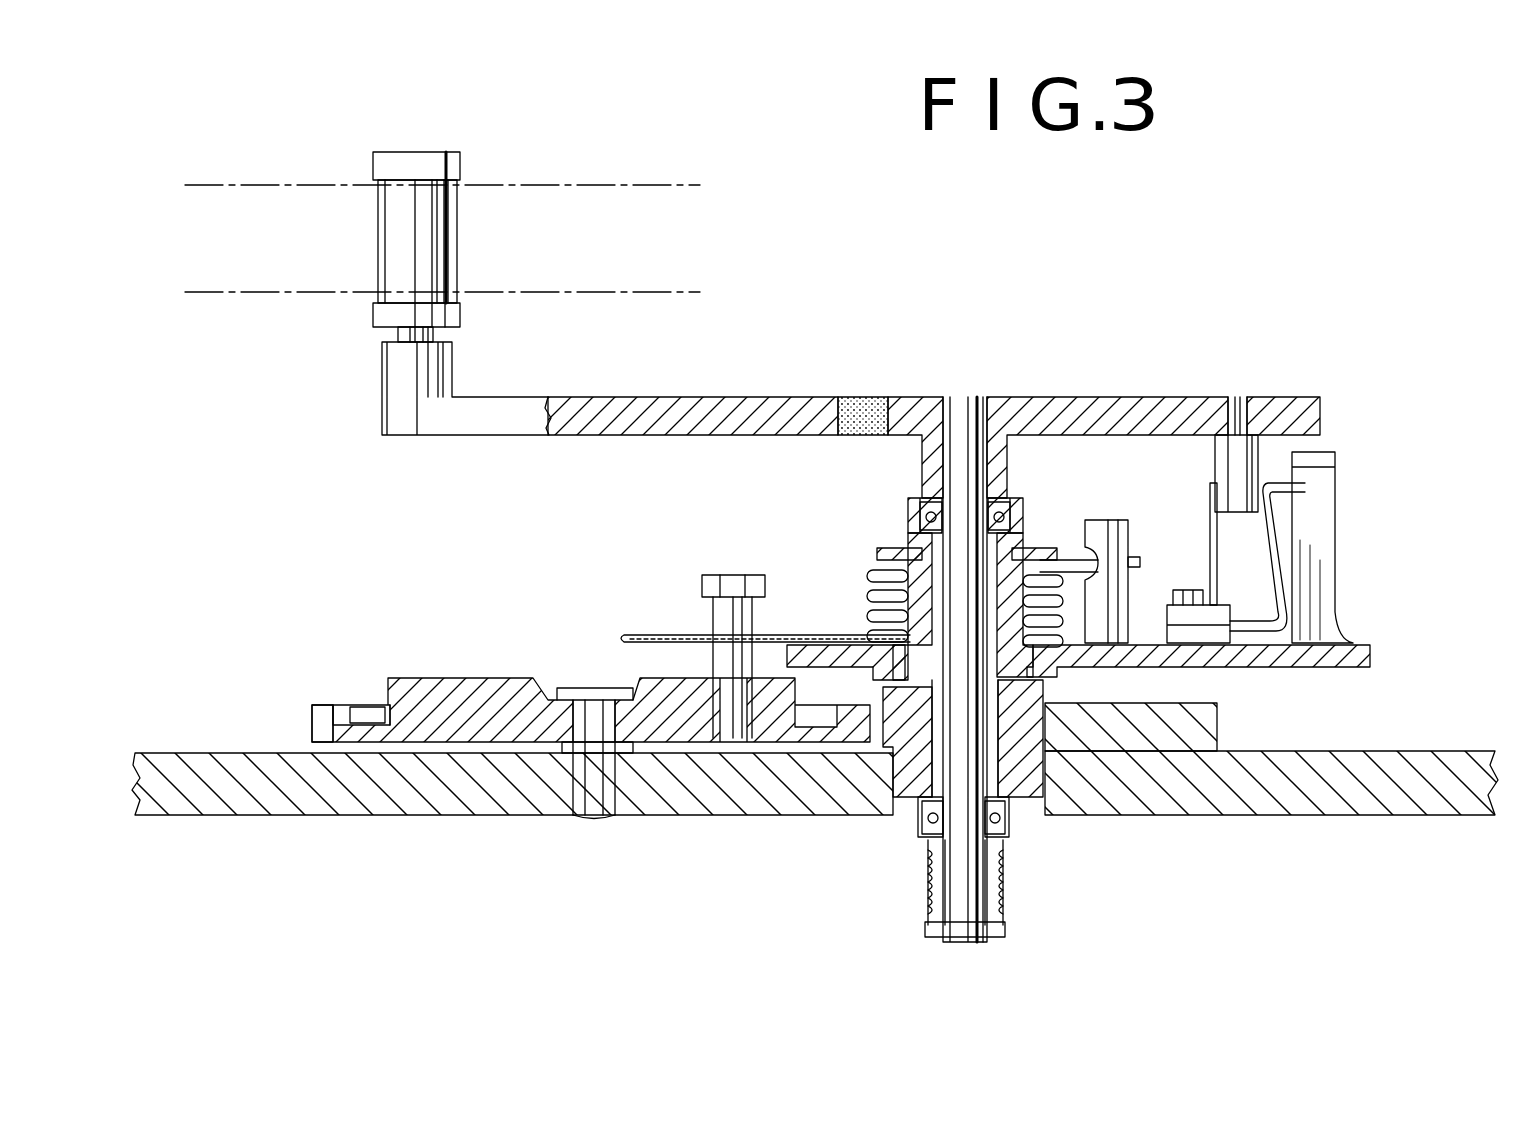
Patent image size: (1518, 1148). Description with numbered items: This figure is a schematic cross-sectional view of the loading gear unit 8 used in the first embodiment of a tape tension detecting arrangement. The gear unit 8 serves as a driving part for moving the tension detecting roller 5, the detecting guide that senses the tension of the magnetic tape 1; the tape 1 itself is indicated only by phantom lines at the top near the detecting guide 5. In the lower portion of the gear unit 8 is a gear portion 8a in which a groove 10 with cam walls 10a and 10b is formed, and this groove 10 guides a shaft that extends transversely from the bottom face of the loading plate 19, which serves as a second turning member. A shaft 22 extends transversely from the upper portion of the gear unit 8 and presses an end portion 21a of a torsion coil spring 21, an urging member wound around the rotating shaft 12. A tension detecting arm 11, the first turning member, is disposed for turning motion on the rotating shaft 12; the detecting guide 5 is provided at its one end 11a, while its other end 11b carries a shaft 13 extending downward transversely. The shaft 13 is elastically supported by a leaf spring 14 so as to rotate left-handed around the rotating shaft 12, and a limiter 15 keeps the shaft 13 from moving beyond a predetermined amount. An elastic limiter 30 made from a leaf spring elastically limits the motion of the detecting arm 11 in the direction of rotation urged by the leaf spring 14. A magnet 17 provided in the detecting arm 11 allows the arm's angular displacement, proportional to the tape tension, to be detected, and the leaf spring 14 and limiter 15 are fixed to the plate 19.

The magnetic tape 1 is at (613, 228).
The tension detecting roller 5 is at (400, 225).
The loading gear unit 8 is at (827, 730).
The gear portion 8a is at (340, 703).
The groove 10 is at (368, 705).
The cam wall 10a is at (395, 735).
The cam wall 10b is at (337, 720).
The tension detecting arm 11 is at (743, 397).
The one end of detecting arm 11a is at (503, 425).
The other end of detecting arm 11b is at (1290, 412).
The rotating shaft 12 is at (957, 412).
The shaft 13 is at (1232, 455).
The leaf spring 14 is at (1297, 528).
The limiter 15 is at (1320, 454).
The magnet 17 is at (864, 400).
The loading plate 19 is at (840, 656).
The torsion coil spring 21 is at (856, 580).
The end portion of torsion coil spring 21a is at (810, 633).
The shaft 22 is at (722, 620).
The elastic limiter 30 is at (1207, 515).